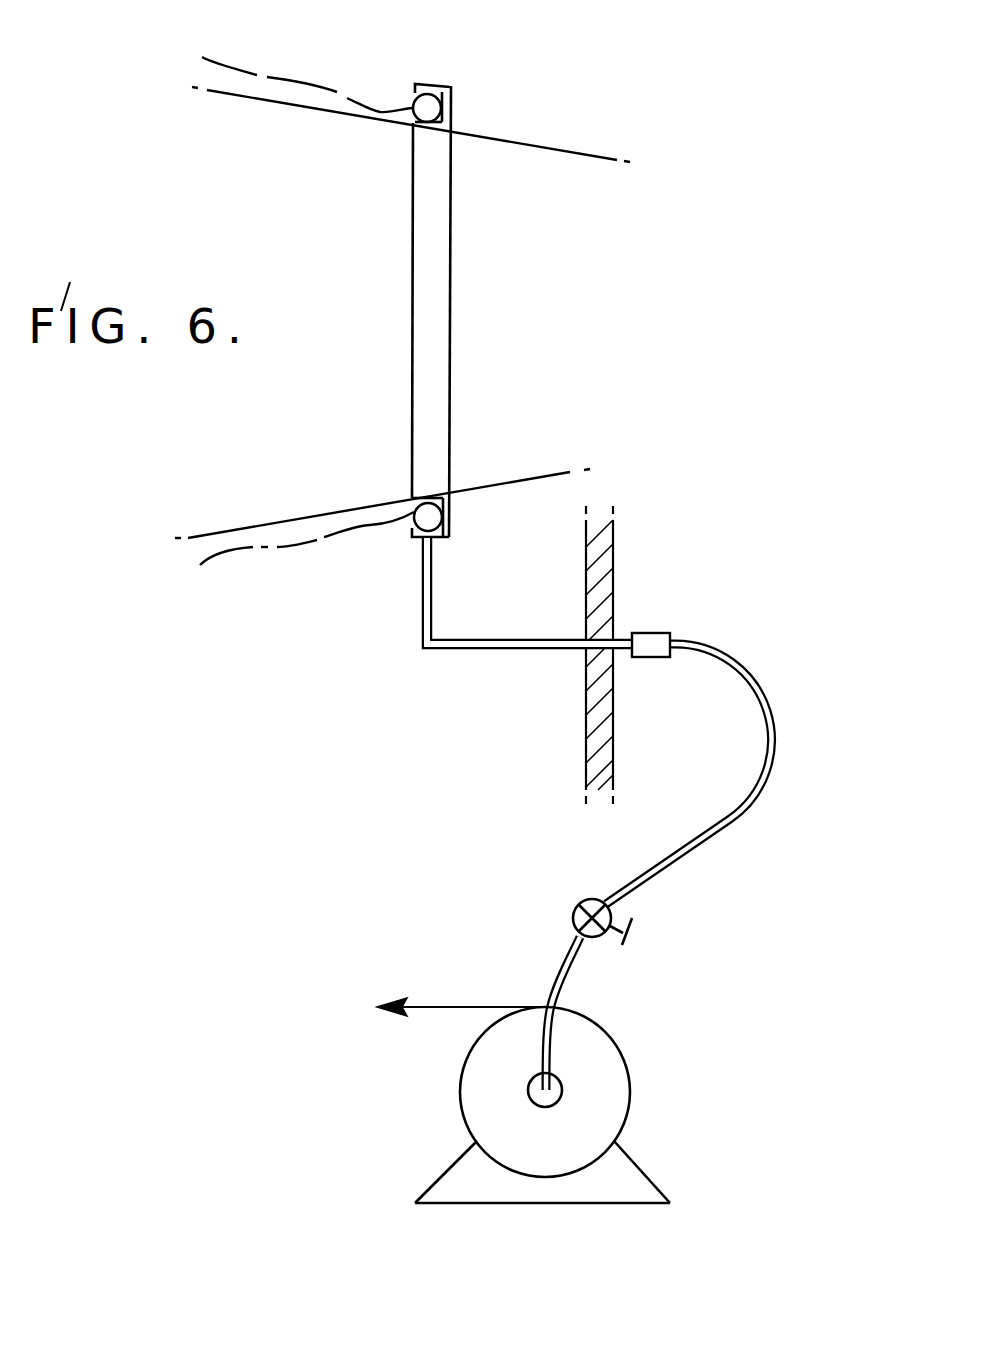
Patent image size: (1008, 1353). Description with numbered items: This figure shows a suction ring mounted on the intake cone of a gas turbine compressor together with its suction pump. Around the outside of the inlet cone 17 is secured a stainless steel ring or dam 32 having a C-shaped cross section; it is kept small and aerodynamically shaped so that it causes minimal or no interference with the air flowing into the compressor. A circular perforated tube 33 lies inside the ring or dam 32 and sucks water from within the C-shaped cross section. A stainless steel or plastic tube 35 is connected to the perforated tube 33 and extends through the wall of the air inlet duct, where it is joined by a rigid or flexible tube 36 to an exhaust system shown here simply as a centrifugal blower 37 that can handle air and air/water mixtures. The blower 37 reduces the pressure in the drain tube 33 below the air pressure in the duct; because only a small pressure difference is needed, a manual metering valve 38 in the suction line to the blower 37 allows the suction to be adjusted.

The inlet cone 17 is at (553, 148).
The ring or dam 32 is at (428, 83).
The circular perforated tube 33 is at (410, 538).
The tube 35 is at (422, 623).
The rigid or flexible tube 36 is at (775, 742).
The centrifugal blower 37 is at (630, 1108).
The manual metering valve 38 is at (570, 913).